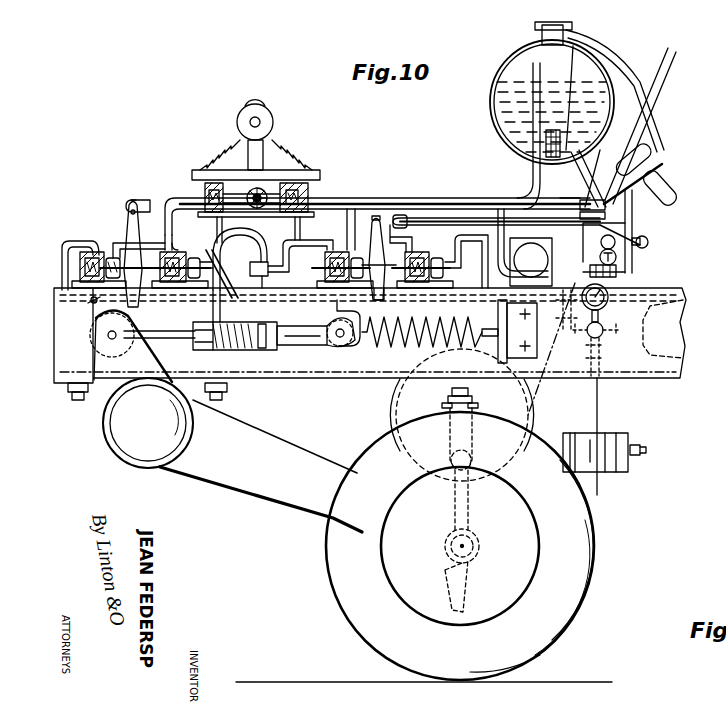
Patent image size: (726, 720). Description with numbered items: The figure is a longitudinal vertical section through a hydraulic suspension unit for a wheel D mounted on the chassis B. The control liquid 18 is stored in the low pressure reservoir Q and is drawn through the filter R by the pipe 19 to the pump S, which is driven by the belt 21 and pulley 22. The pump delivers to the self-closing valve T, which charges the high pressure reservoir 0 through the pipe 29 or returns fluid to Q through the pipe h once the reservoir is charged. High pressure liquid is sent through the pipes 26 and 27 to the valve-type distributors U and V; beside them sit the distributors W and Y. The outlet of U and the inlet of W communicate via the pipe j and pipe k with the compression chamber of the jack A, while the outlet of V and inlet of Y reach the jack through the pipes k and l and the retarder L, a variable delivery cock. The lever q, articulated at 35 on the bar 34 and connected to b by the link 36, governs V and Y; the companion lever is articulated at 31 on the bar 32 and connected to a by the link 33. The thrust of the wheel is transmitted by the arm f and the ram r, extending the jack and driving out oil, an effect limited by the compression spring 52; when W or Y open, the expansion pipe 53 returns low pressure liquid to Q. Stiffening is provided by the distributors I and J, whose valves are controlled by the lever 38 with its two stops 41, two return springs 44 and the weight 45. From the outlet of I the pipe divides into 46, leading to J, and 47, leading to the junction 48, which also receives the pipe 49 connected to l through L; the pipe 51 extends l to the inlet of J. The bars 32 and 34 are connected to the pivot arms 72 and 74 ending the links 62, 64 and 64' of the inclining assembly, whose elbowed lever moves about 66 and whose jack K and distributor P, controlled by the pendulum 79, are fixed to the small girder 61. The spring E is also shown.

The chassis B is at (647, 362).
The high pressure reservoir 0 is at (663, 318).
The link 36 is at (94, 303).
The wheel D is at (530, 553).
The pulley 22 is at (410, 407).
The arm f is at (245, 472).
The pivot g is at (140, 432).
The fixed end point b is at (110, 337).
The ram r is at (162, 330).
The compression spring 52 is at (240, 348).
The jack A is at (296, 338).
The fixed end point a is at (343, 338).
The link 33 is at (363, 303).
The spring E is at (443, 345).
The valve distributor P is at (384, 294).
The self-closing valve T is at (600, 284).
The pipe 29 is at (603, 318).
The pipe 27 is at (62, 272).
The belt 21 is at (536, 395).
The pendulum 79 is at (614, 453).
The low pressure reservoir Q is at (493, 90).
The liquid 18 is at (512, 122).
The filter R is at (546, 144).
The pipe 19 is at (578, 180).
The link 64 is at (640, 119).
The link 64' is at (656, 159).
The bar 34 is at (173, 203).
The bar 32 is at (453, 220).
The distributor U is at (402, 216).
The expansion pipe 53 is at (184, 198).
The distributor I is at (296, 186).
The distributor J is at (222, 186).
The stops 41 is at (266, 206).
The jack K is at (252, 205).
The return springs 44 is at (242, 143).
The lever 38 is at (262, 160).
The weight 45 is at (255, 105).
The retarder L is at (216, 252).
The pipe 46 is at (262, 266).
The pipe 47 is at (290, 258).
The junction 48 is at (257, 270).
The pipe 49 is at (231, 270).
The pipe 51 is at (215, 226).
The pipe k is at (213, 311).
The distributor V is at (100, 252).
The lever q is at (133, 256).
The articulation 35 is at (133, 200).
The pipe l is at (148, 238).
The distributor Y is at (163, 230).
The distributor W is at (350, 235).
The pipe j is at (379, 230).
The articulation 31 is at (383, 216).
The pipe 26 is at (462, 256).
The pipe h is at (500, 252).
The pump S is at (547, 246).
The pivot arm 74 is at (607, 207).
The pivot 66 is at (632, 221).
The pivot arm 72 is at (634, 240).
The link 62 is at (648, 243).
The small girder 61 is at (618, 264).